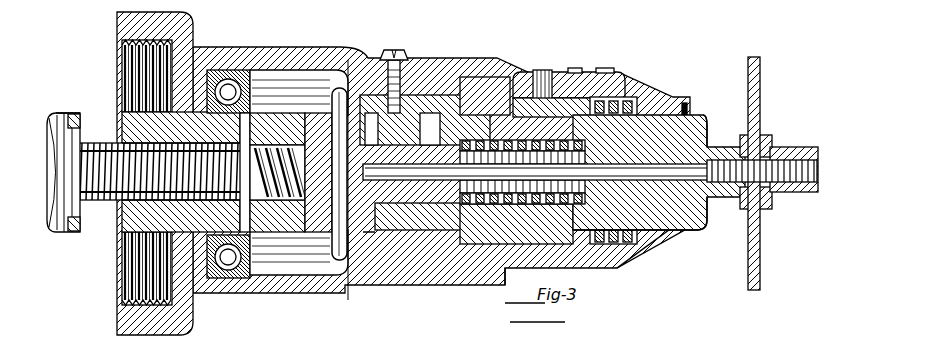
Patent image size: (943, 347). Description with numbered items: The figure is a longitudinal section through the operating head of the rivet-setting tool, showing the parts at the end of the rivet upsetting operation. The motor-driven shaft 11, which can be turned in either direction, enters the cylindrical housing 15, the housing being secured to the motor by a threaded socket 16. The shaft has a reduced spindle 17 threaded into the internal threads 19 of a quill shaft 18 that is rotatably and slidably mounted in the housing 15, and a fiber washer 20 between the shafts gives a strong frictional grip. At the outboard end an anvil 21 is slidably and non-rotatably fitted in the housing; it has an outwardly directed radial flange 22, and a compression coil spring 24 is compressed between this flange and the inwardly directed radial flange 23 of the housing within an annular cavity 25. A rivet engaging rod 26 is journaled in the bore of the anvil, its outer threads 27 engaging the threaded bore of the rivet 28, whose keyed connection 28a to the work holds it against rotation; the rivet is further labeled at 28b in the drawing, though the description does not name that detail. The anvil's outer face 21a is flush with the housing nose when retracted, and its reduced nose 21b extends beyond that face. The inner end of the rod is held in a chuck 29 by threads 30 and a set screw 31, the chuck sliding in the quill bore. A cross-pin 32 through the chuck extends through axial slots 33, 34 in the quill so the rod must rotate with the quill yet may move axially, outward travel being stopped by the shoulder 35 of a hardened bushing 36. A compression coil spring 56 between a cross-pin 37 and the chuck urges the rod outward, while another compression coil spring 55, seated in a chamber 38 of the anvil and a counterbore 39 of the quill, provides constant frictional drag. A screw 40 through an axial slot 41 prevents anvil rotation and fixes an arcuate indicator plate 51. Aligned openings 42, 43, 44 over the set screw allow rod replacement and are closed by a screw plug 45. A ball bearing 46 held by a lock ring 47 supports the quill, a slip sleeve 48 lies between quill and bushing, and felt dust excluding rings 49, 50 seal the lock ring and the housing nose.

The shaft 11 is at (58, 104).
The cylindrical housing 15 is at (267, 290).
The threaded socket 16 is at (117, 22).
The reduced spindle 17 is at (110, 200).
The quill shaft 18 is at (123, 140).
The internal threads 19 is at (197, 203).
The washer 20 is at (80, 114).
The anvil 21 is at (697, 120).
The outer face 21a is at (710, 120).
The nose 21b is at (710, 207).
The radial flange 22 is at (603, 93).
The radial flange 23 is at (645, 105).
The compression coil spring 24 is at (650, 250).
The annular cavity 25 is at (632, 266).
The rivet engaging rod 26 is at (680, 222).
The threads 27 is at (778, 147).
The rivet 28 is at (793, 187).
The keyed connection 28a is at (760, 137).
The collar 28b is at (772, 205).
The chuck 29 is at (372, 233).
The threads 30 is at (507, 73).
The set screw 31 is at (467, 117).
The cross-pin 32 is at (352, 58).
The axial slot 33 is at (340, 88).
The axial slot 34 is at (270, 233).
The shoulder 35 is at (337, 263).
The bushing 36 is at (433, 237).
The cross-pin 37 is at (280, 145).
The chamber 38 is at (600, 250).
The counterbore 39 is at (493, 237).
The screw 40 is at (577, 70).
The axial slot 41 is at (538, 83).
The opening 42 is at (407, 88).
The opening 43 is at (435, 95).
The opening 44 is at (478, 80).
The screw plug 45 is at (396, 55).
The ball bearing 46 is at (228, 72).
The lock ring 47 is at (195, 62).
The slip sleeve 48 is at (403, 233).
The felt dust excluding ring 49 is at (200, 280).
The felt dust excluding ring 50 is at (668, 110).
The arcuate plate 51 is at (605, 70).
The compression coil spring 55 is at (503, 272).
The compression coil spring 56 is at (315, 125).